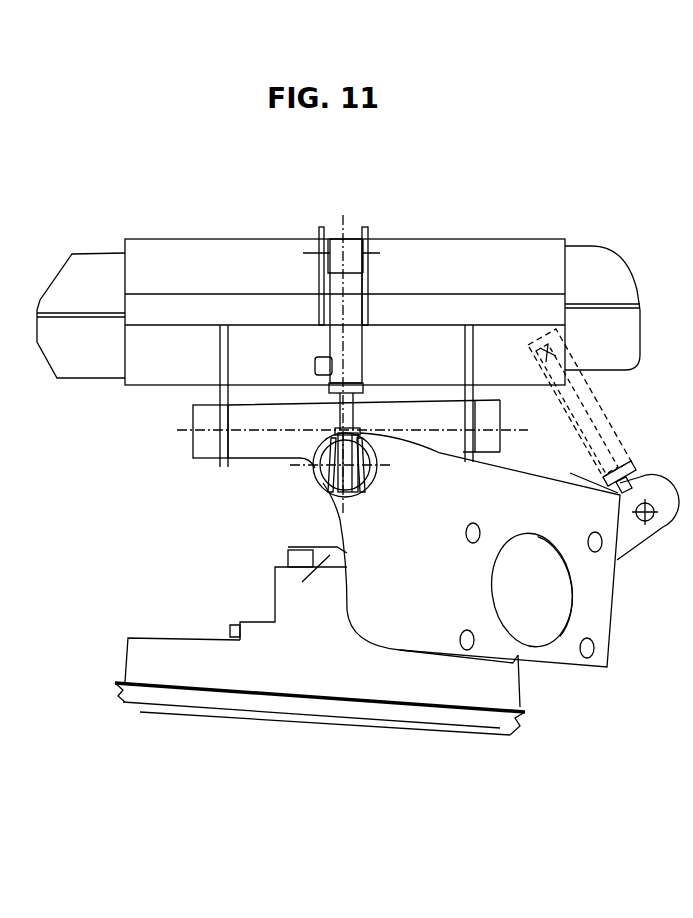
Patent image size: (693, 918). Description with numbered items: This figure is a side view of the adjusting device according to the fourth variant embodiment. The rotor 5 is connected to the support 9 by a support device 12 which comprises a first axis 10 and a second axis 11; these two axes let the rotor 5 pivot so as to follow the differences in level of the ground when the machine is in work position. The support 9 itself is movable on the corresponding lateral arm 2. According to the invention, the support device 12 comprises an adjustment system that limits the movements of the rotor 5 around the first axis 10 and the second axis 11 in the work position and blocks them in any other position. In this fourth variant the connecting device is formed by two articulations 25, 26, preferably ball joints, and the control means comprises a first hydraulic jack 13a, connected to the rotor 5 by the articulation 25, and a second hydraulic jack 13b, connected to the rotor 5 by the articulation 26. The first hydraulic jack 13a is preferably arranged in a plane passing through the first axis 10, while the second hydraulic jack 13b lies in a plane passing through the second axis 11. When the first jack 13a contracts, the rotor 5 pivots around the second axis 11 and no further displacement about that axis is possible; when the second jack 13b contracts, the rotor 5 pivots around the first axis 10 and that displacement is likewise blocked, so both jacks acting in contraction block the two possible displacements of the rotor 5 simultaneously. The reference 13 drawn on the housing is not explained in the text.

The lateral arm 2 is at (77, 288).
The support 9 is at (485, 265).
The right housing section 13 is at (627, 308).
The first hydraulic jack 13a is at (355, 294).
The second hydraulic jack 13b is at (622, 445).
The second axis 11 is at (188, 432).
The support device 12 is at (260, 487).
The first axis 10 is at (345, 465).
The articulation 25 is at (355, 495).
The articulation 26 is at (663, 527).
The rotor 5 is at (428, 695).